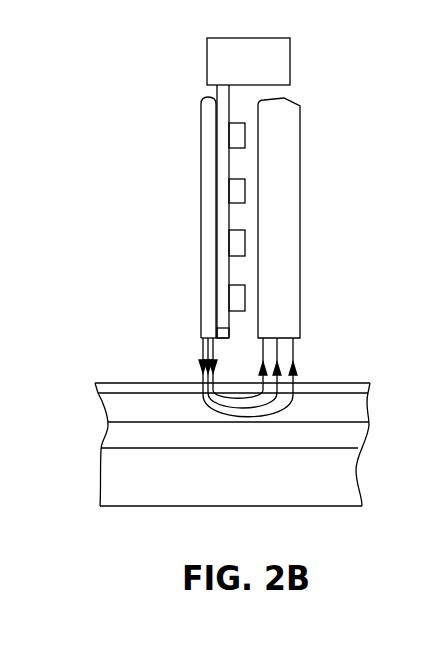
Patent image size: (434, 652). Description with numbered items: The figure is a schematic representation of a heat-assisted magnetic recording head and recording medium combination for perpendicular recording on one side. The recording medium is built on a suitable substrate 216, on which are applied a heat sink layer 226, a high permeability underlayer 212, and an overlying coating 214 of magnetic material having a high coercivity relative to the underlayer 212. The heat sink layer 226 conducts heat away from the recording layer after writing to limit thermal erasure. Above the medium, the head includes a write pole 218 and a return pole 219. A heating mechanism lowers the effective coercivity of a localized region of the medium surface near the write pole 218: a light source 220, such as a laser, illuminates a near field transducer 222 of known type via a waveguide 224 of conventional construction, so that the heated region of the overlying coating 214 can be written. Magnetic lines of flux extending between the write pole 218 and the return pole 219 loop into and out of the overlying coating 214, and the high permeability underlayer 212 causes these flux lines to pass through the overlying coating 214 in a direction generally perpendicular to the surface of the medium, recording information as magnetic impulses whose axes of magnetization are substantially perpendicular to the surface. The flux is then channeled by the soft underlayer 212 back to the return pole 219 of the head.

The underlayer 212 is at (106, 408).
The overlying coating 214 is at (127, 385).
The substrate 216 is at (198, 490).
The write pole 218 is at (207, 274).
The return pole 219 is at (296, 256).
The light source 220 is at (229, 73).
The near field transducer 222 is at (218, 332).
The waveguide 224 is at (207, 95).
The heat sink layer 226 is at (107, 436).